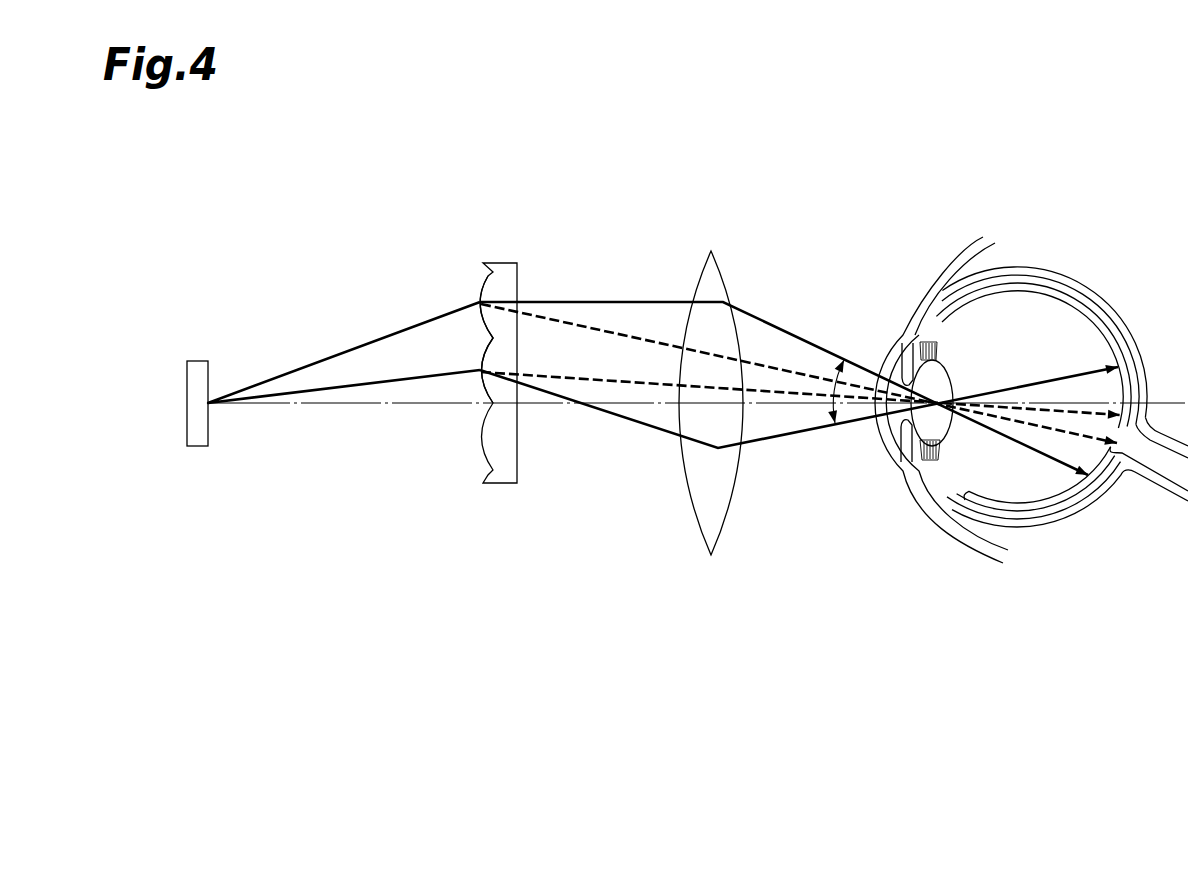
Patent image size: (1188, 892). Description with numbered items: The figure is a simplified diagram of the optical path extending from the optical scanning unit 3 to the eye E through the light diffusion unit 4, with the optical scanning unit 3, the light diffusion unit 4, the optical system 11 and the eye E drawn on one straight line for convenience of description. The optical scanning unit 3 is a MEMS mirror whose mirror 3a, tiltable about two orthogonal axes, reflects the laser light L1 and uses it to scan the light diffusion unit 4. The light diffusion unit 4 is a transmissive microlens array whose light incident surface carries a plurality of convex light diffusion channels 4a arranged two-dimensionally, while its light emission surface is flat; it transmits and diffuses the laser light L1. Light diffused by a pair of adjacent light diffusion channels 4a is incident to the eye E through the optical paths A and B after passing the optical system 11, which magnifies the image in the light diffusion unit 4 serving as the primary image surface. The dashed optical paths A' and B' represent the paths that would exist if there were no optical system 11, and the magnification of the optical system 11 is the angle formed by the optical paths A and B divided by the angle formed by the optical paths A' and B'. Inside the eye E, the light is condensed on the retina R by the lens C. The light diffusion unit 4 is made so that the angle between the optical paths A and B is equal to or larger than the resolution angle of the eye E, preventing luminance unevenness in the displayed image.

The optical scanning unit 3 is at (197, 455).
The mirror 3a is at (209, 378).
The laser light L1 is at (362, 382).
The light diffusion unit 4 is at (502, 485).
The light diffusion channel 4a is at (482, 292).
The optical system 11 is at (711, 557).
The optical path B is at (784, 376).
The optical path A is at (799, 446).
The optical path B' is at (799, 334).
The optical path A' is at (800, 427).
The eye E is at (1021, 417).
The lens C is at (925, 428).
The retina R is at (1064, 488).